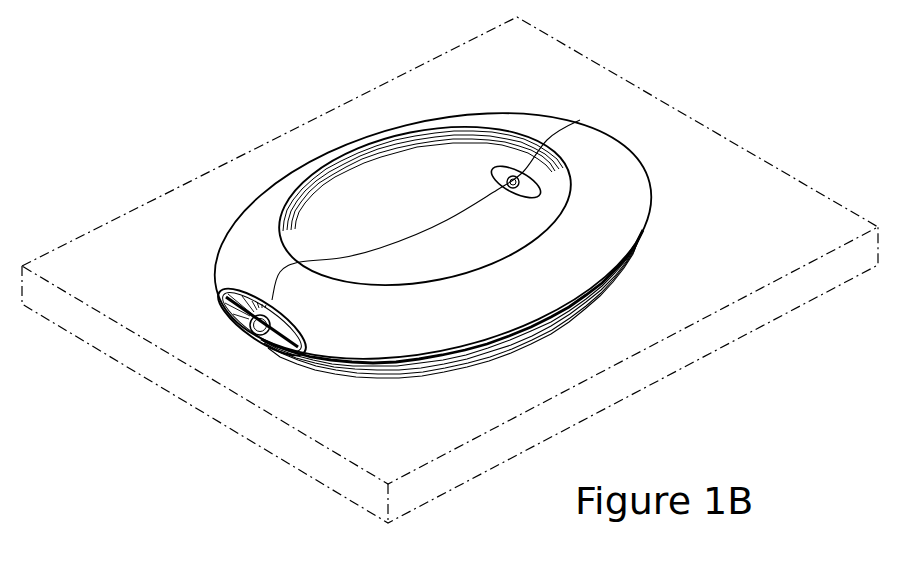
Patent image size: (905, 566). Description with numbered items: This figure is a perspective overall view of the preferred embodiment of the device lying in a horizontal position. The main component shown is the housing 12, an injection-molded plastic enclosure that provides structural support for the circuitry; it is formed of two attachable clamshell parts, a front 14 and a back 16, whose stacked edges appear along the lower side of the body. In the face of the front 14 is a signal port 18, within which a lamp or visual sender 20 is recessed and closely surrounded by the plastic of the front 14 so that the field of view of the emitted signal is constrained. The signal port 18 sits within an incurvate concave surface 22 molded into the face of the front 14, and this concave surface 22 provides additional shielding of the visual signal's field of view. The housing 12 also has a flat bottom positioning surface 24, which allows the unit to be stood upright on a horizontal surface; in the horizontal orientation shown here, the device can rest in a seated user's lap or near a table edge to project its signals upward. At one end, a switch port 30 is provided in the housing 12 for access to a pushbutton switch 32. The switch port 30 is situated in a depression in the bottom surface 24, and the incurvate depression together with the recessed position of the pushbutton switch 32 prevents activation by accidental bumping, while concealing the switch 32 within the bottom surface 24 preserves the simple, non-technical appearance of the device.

The housing 12 is at (613, 177).
The front 14 is at (405, 336).
The back 16 is at (413, 361).
The signal port 18 is at (492, 180).
The visual sender 20 is at (514, 190).
The incurvate concave surface 22 is at (440, 140).
The bottom positioning surface 24 is at (222, 310).
The switch port 30 is at (280, 322).
The pushbutton switch 32 is at (253, 340).